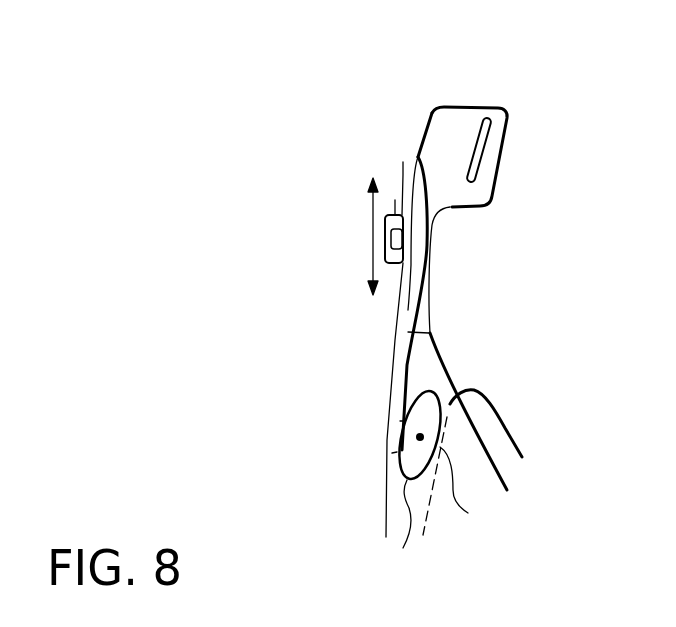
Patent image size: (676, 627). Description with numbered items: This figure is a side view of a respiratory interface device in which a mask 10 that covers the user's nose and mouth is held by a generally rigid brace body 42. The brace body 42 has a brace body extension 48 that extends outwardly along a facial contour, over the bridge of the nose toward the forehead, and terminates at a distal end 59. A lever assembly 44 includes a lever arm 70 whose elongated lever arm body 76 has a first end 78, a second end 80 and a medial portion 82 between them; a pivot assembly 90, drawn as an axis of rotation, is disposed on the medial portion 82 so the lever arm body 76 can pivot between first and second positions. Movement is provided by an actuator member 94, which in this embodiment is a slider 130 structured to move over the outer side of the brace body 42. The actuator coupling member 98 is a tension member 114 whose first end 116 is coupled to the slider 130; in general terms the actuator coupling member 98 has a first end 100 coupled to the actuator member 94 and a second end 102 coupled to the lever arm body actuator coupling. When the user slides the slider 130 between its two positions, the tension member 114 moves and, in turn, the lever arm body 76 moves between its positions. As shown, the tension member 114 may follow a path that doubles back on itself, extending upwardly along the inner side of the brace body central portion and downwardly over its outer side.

The mask 10 is at (492, 424).
The brace body 42 is at (391, 522).
The lever assembly 44 is at (526, 354).
The brace body extension 48 is at (429, 293).
The distal end 59 is at (453, 107).
The lever arm 70 is at (469, 493).
The lever arm body 76 is at (438, 391).
The first end 78 is at (416, 495).
The second end 80 is at (425, 393).
The medial portion 82 is at (400, 421).
The pivot assembly 90 is at (417, 437).
The actuator member 94 is at (386, 218).
The actuator coupling member 98 is at (421, 264).
The first end 100 is at (395, 200).
The second end 102 is at (392, 453).
The tension member 114 is at (430, 333).
The first end 116 is at (403, 162).
The slider 130 is at (392, 264).